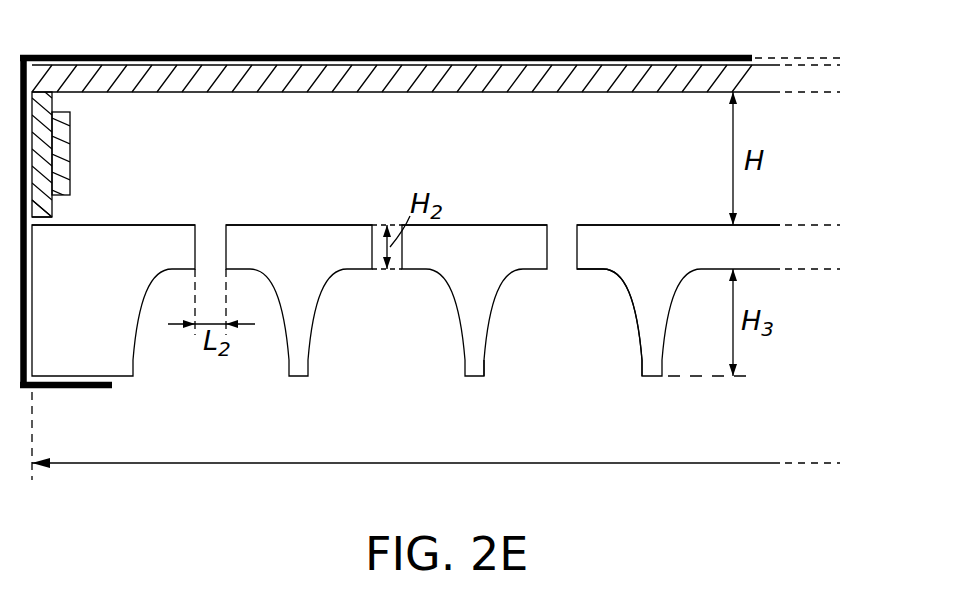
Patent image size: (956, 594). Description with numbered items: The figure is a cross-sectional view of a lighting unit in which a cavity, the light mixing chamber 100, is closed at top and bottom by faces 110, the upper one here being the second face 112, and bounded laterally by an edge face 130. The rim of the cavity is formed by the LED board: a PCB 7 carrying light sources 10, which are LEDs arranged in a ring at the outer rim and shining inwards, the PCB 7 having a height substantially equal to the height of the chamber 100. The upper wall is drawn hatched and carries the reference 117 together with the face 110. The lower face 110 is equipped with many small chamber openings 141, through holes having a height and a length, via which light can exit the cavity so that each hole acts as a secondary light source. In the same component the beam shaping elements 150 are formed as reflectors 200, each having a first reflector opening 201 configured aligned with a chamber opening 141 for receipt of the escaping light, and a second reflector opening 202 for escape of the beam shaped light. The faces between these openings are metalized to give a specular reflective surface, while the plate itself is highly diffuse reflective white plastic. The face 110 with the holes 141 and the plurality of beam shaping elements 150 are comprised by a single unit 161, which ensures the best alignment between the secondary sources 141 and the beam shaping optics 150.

The light mixing chamber 100 is at (618, 103).
The face 110 is at (436, 145).
The second face 112 is at (385, 93).
The protruding portions of first substrate 117 is at (178, 222).
The edge face 130 is at (52, 99).
The light source 10 is at (62, 157).
The PCB 7 is at (42, 210).
The chamber opening 141 is at (210, 243).
The beam shaping element 150 is at (436, 339).
The reflector 200 is at (395, 378).
The first reflector opening 201 is at (566, 256).
The second reflector opening 202 is at (598, 360).
The single unit 161 is at (694, 372).